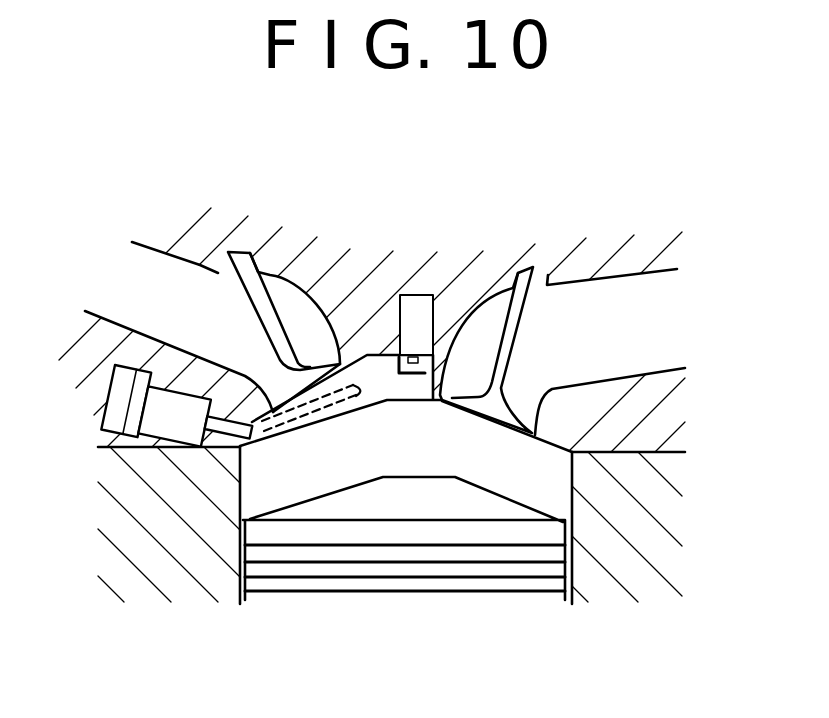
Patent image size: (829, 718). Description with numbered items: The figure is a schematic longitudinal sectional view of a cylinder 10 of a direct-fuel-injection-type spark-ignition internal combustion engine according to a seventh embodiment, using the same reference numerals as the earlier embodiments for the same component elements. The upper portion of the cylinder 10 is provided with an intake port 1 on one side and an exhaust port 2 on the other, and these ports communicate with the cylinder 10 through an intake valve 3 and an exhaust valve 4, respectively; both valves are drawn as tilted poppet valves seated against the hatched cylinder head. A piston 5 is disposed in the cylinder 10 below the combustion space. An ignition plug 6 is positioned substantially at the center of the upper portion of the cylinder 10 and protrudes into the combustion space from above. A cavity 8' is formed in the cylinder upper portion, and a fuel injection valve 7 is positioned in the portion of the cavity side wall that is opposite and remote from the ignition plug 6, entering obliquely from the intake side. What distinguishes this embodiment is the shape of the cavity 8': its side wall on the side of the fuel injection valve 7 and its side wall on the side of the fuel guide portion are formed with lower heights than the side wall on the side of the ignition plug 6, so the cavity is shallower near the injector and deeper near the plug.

The intake port 1 is at (183, 290).
The exhaust port 2 is at (613, 305).
The intake valve 3 is at (267, 315).
The exhaust valve 4 is at (512, 330).
The piston 5 is at (418, 508).
The ignition plug 6 is at (418, 310).
The fuel injection valve 7 is at (110, 408).
The cavity 8' is at (311, 433).
The cylinder 10 is at (573, 507).